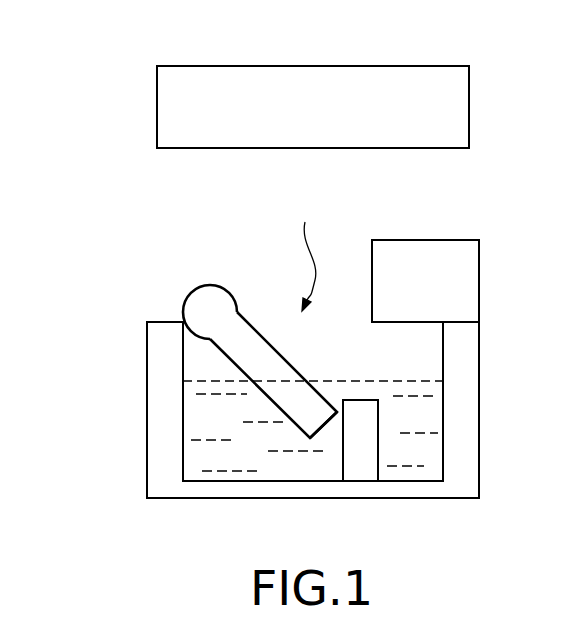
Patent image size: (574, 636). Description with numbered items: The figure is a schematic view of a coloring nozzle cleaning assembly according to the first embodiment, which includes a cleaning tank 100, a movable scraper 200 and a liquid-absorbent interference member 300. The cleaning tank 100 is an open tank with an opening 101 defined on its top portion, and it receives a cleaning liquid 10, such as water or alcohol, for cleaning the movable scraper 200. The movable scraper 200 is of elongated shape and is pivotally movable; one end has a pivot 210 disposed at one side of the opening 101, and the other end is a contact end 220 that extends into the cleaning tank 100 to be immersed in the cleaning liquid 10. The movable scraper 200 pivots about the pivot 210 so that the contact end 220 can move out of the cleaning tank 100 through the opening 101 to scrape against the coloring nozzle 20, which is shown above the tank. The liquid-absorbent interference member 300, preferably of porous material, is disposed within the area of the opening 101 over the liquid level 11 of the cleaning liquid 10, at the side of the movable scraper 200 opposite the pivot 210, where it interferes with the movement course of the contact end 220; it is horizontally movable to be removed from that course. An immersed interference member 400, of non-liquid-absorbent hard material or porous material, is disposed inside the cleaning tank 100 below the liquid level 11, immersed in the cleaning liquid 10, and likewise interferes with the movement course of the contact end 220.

The coloring nozzle 20 is at (313, 73).
The cleaning tank 100 is at (147, 406).
The liquid-absorbent interference member 300 is at (423, 247).
The immersed interference member 400 is at (373, 452).
The liquid level 11 is at (412, 373).
The cleaning liquid 10 is at (423, 418).
The movable scraper 200 is at (262, 340).
The pivot 210 is at (200, 289).
The contact end 220 is at (318, 408).
The opening 101 is at (307, 253).